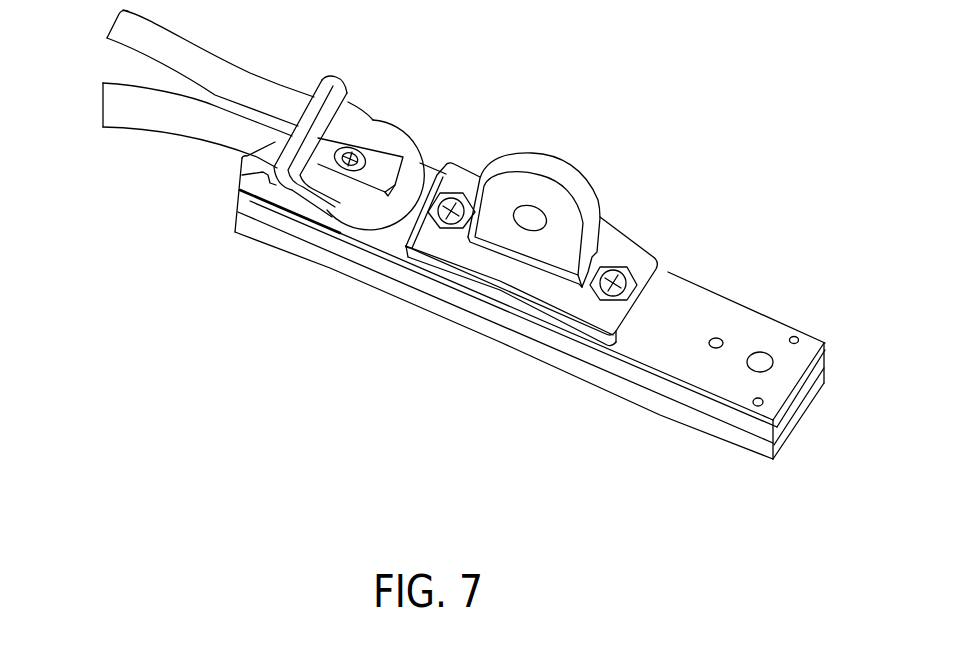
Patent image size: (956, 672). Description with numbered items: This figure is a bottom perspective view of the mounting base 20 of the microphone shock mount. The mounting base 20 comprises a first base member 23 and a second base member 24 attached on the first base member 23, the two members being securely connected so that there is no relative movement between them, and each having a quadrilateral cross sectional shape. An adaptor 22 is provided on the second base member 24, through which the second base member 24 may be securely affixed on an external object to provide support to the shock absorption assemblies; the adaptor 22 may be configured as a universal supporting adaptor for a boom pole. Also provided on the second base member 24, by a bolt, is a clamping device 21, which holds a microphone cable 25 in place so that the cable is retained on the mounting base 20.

The mounting base 20 is at (480, 348).
The clamping device 21 is at (280, 195).
The adaptor 22 is at (542, 178).
The first base member 23 is at (707, 438).
The second base member 24 is at (763, 333).
The microphone cable 25 is at (163, 113).